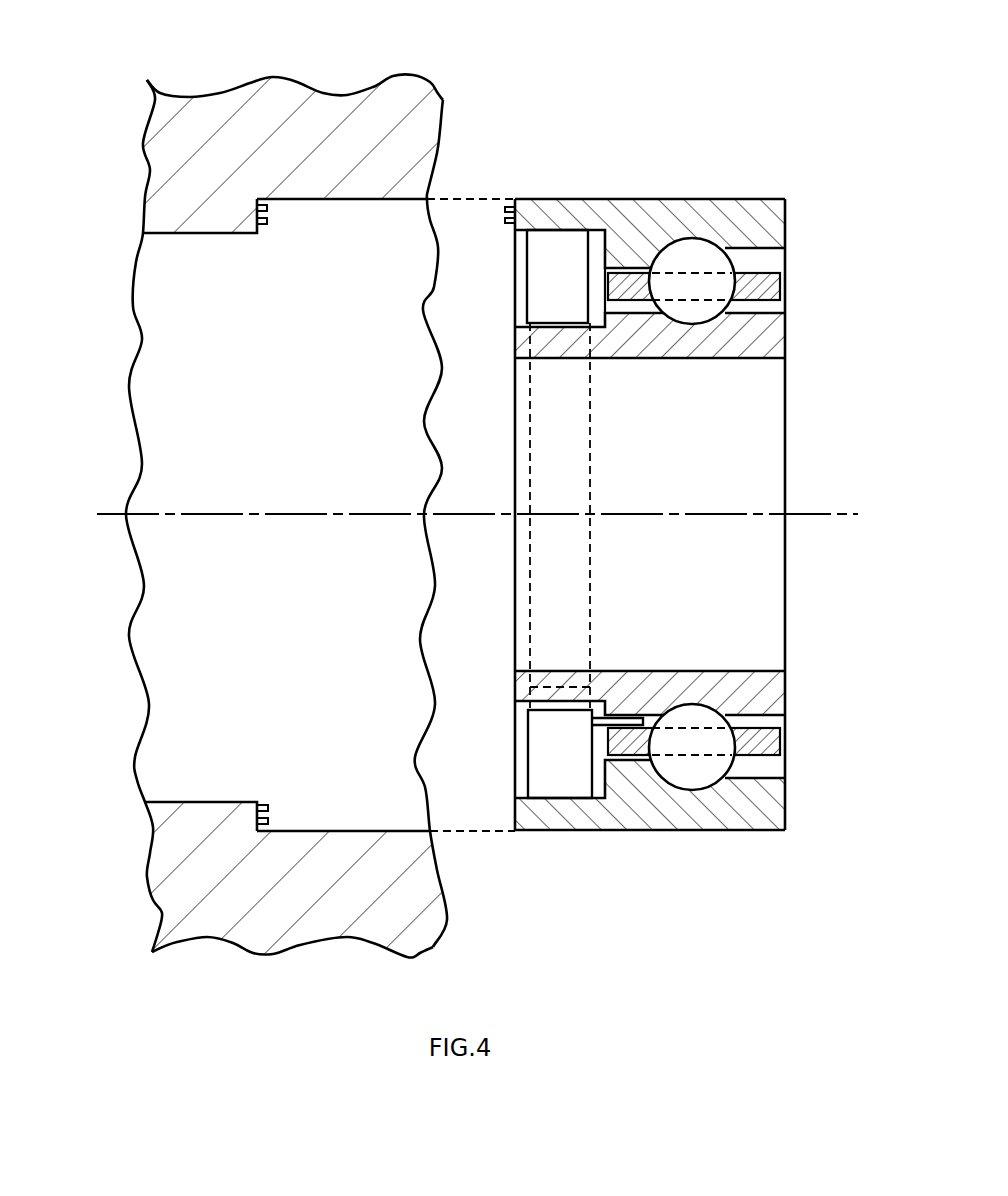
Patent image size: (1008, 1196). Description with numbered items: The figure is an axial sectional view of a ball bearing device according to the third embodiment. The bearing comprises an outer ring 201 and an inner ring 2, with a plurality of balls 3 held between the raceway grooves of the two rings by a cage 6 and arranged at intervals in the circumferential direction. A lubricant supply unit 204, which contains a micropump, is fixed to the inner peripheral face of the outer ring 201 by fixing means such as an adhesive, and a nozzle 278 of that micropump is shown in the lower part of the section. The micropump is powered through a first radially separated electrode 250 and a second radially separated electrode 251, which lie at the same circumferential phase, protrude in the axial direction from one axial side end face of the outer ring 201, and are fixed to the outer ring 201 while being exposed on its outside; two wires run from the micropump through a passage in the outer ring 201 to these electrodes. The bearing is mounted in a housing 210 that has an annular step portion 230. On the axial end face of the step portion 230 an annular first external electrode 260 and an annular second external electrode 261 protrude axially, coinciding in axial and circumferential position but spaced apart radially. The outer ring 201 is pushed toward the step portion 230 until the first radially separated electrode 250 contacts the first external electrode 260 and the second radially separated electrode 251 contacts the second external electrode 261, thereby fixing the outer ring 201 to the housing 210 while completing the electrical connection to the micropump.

The housing 210 is at (203, 125).
The first external electrode 260 is at (265, 210).
The second external electrode 261 is at (265, 222).
The step portion 230 is at (262, 230).
The second radially separated electrode 251 is at (506, 222).
The first radially separated electrode 250 is at (506, 208).
The lubricant supply unit 204 is at (557, 242).
The outer ring 201 is at (677, 213).
The ball 3 is at (714, 258).
The cage 6 is at (774, 289).
The inner ring 2 is at (774, 335).
The nozzle 278 is at (623, 720).